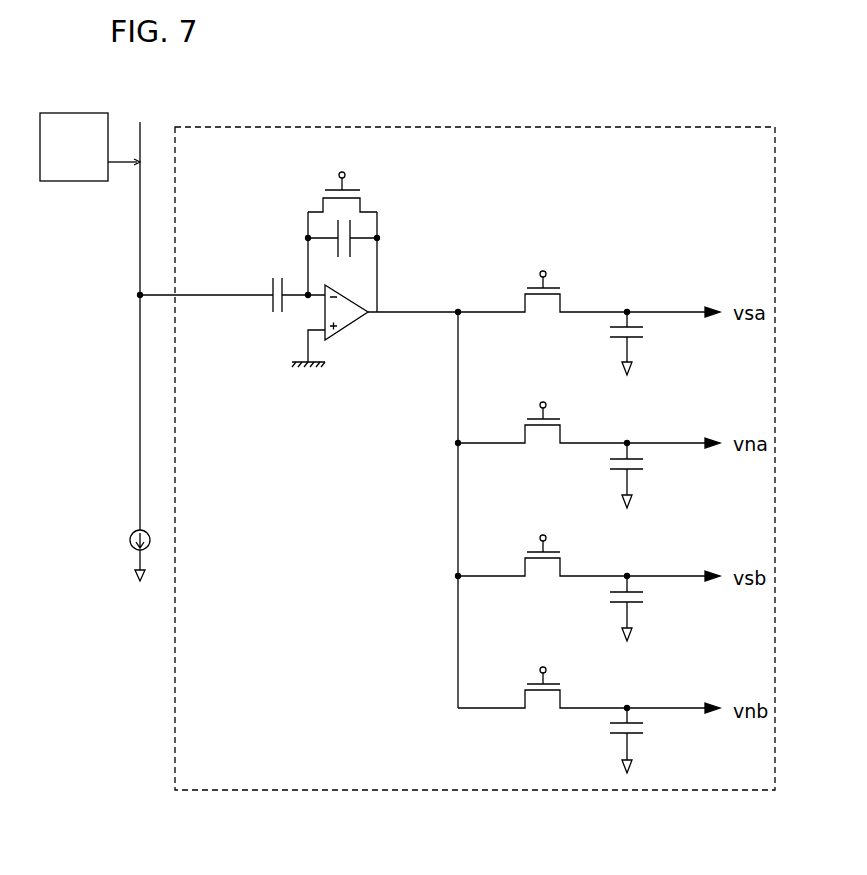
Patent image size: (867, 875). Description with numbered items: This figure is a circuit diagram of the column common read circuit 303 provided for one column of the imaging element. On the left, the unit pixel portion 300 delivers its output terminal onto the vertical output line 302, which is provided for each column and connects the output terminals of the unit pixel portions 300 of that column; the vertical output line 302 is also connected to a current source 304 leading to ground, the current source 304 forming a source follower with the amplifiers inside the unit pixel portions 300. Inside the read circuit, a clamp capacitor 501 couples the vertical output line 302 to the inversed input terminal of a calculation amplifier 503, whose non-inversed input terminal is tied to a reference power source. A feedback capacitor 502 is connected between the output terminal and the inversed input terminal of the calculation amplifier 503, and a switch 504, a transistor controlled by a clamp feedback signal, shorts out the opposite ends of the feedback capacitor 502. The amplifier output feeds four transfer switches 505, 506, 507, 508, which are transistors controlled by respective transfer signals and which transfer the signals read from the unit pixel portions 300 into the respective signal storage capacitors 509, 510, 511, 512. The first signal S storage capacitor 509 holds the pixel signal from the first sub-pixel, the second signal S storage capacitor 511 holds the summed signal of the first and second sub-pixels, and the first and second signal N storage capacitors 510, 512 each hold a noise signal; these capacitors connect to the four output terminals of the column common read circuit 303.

The unit pixel portion 300 is at (73, 182).
The vertical output line 302 is at (141, 124).
The column common read circuit 303 is at (672, 126).
The current source 304 is at (128, 545).
The clamp capacitor 501 is at (272, 305).
The feedback capacitor 502 is at (352, 232).
The calculation amplifier 503 is at (350, 327).
The switch 504 is at (352, 190).
The transfer switch 505 is at (557, 289).
The transfer switch 506 is at (557, 420).
The transfer switch 507 is at (557, 553).
The transfer switch 508 is at (557, 685).
The first signal S storage capacitor 509 is at (615, 337).
The first signal N storage capacitor 510 is at (615, 470).
The second signal S storage capacitor 511 is at (615, 603).
The second signal N storage capacitor 512 is at (615, 734).